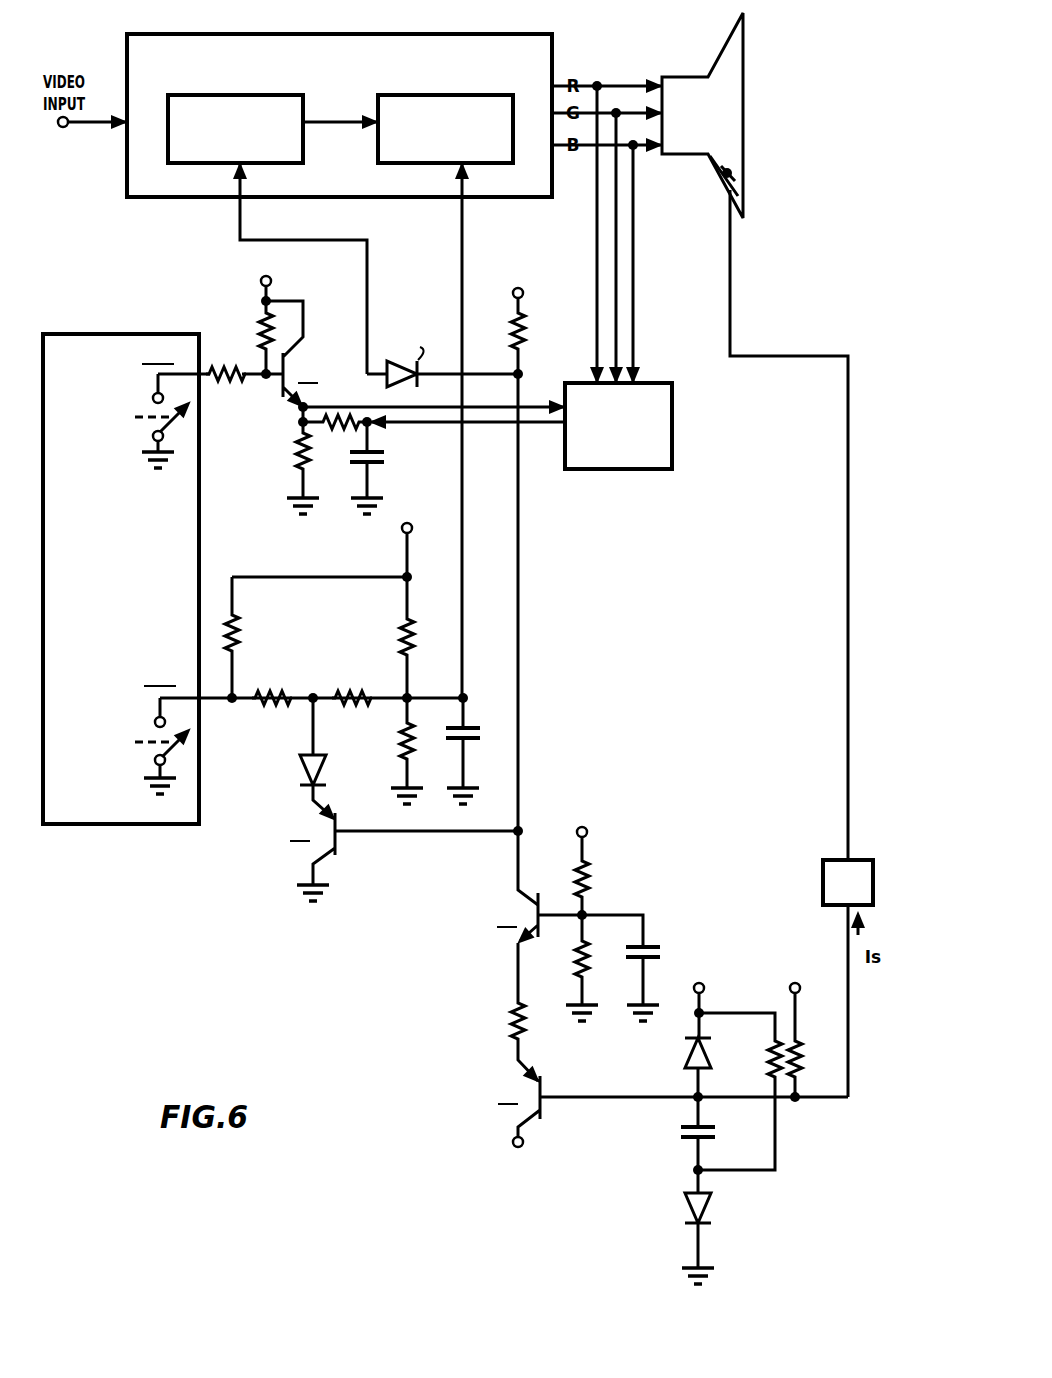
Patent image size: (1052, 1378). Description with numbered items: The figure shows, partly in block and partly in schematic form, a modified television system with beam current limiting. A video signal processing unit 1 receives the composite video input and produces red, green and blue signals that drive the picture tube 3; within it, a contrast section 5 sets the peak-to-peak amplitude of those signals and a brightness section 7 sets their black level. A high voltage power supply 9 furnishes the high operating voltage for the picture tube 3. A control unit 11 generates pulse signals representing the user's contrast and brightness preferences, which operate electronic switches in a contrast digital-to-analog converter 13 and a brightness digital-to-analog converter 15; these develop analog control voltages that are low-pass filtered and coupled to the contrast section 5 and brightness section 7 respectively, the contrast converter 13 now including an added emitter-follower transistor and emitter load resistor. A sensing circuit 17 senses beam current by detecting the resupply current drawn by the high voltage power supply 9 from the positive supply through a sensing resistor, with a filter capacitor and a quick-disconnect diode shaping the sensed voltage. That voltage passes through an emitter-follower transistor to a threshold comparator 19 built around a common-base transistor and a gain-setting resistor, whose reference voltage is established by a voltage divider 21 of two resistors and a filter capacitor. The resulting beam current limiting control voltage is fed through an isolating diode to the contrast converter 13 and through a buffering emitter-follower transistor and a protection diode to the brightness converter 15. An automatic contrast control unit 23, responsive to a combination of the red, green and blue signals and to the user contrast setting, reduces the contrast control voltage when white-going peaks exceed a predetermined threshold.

The video signal processing unit 1 is at (436, 79).
The picture tube 3 is at (683, 127).
The contrast section 5 is at (230, 153).
The brightness section 7 is at (440, 153).
The high voltage power supply 9 is at (858, 860).
The control unit 11 is at (103, 587).
The contrast digital-to-analog converter 13 is at (213, 273).
The brightness digital-to-analog converter 15 is at (336, 564).
The beam current sensing circuit 17 is at (738, 939).
The threshold comparator 19 is at (444, 942).
The reference voltage determining voltage divider 21 is at (631, 861).
The automatic contrast control unit 23 is at (609, 458).